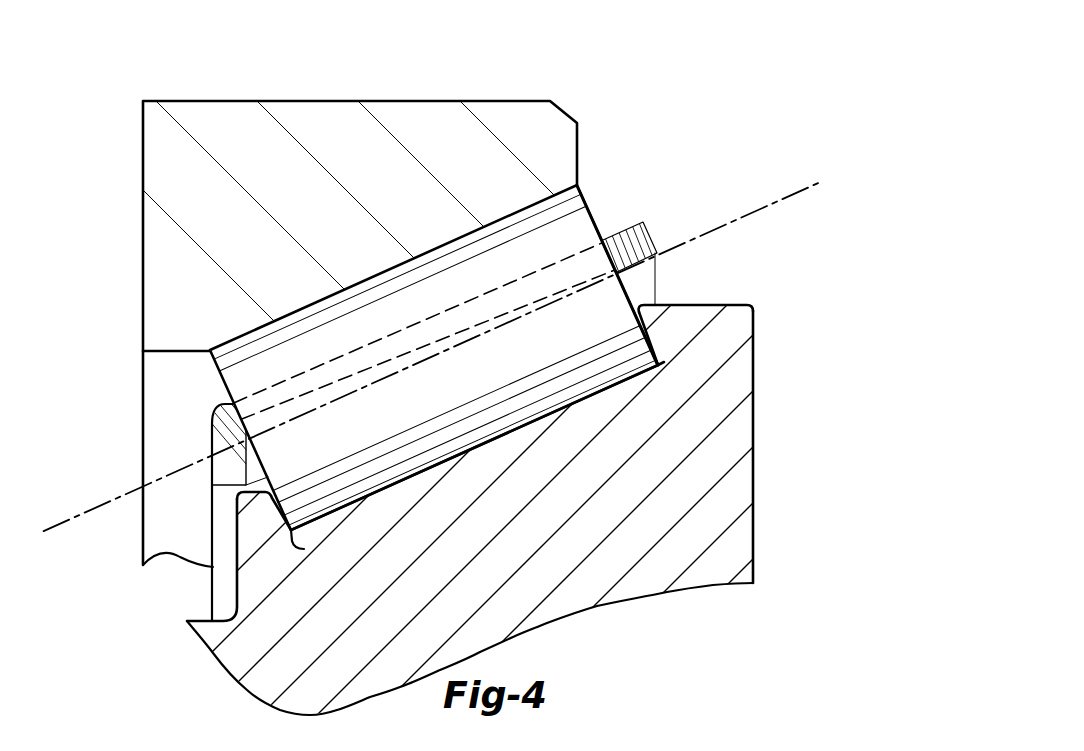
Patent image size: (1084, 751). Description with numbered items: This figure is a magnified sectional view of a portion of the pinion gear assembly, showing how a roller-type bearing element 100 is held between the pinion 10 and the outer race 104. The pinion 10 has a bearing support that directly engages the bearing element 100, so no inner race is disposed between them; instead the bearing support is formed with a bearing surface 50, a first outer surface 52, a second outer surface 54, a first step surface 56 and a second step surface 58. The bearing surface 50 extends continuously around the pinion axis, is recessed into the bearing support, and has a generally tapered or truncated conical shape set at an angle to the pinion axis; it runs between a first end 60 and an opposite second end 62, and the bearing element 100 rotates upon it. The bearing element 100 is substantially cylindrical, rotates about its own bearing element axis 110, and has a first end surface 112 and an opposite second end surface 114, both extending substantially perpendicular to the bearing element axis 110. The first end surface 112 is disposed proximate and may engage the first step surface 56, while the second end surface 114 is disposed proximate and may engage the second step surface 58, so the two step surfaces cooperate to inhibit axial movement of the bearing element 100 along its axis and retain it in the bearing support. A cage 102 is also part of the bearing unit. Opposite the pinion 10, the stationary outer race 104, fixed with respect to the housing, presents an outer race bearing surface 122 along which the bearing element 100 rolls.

The pinion 10 is at (700, 468).
The bearing surface 50 is at (490, 436).
The first outer surface 52 is at (721, 304).
The second outer surface 54 is at (237, 531).
The first step surface 56 is at (638, 330).
The second step surface 58 is at (290, 500).
The first end 60 is at (668, 363).
The second end 62 is at (304, 549).
The bearing element 100 is at (466, 389).
The cage 102 is at (208, 443).
The outer race 104 is at (233, 123).
The bearing element axis 110 is at (733, 218).
The first end surface 112 is at (585, 197).
The second end surface 114 is at (207, 354).
The outer race bearing surface 122 is at (376, 292).